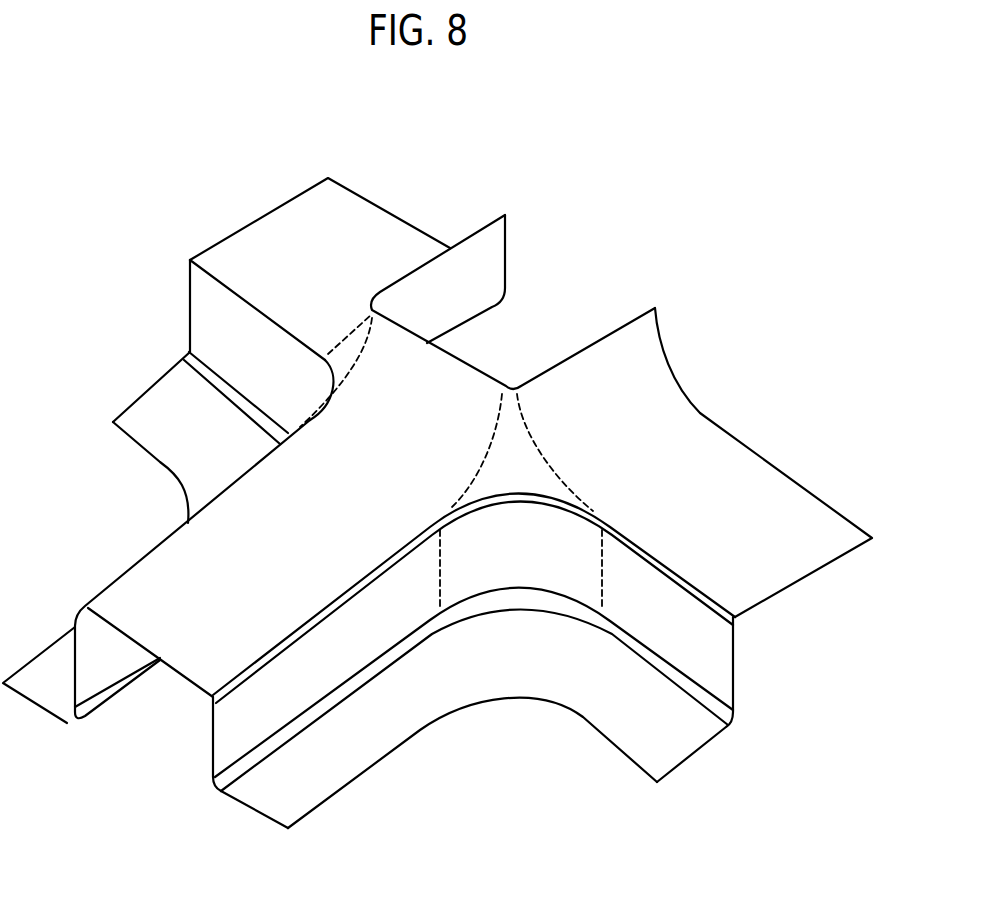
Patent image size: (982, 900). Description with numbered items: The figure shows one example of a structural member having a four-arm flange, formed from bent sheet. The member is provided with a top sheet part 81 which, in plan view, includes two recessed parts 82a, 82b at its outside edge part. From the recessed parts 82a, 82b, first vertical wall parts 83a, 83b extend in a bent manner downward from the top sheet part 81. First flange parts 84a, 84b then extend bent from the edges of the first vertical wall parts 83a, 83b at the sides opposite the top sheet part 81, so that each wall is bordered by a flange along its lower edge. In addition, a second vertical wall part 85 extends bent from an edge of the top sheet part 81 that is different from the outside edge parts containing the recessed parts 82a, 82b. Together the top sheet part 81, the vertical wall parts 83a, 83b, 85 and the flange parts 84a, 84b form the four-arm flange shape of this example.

The top sheet part 81 is at (338, 260).
The recessed part 82a is at (323, 377).
The recessed part 82b is at (535, 502).
The first vertical wall part 83a is at (220, 328).
The first vertical wall part 83b is at (715, 643).
The first flange part 84a is at (205, 435).
The first flange part 84b is at (658, 735).
The second vertical wall part 85 is at (437, 373).